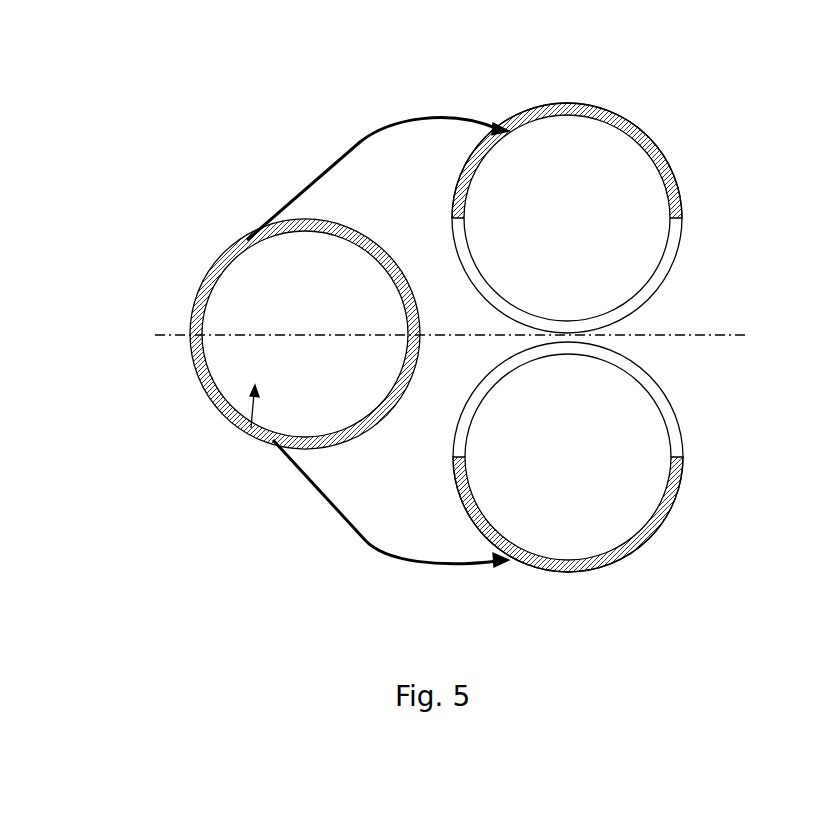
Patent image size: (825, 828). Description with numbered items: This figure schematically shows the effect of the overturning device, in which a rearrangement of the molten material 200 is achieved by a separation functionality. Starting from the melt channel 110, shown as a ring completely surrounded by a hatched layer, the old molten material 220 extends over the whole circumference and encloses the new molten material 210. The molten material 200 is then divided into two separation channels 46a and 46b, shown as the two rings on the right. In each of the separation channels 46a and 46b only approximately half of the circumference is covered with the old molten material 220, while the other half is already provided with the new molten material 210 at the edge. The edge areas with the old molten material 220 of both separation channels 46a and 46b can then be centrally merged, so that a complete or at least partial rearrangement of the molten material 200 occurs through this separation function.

The melt channel 110 is at (233, 247).
The molten material 200 is at (248, 433).
The new molten material 210 is at (240, 357).
The old molten material 220 is at (198, 325).
The separation channel 46a is at (628, 121).
The separation channel 46b is at (672, 498).